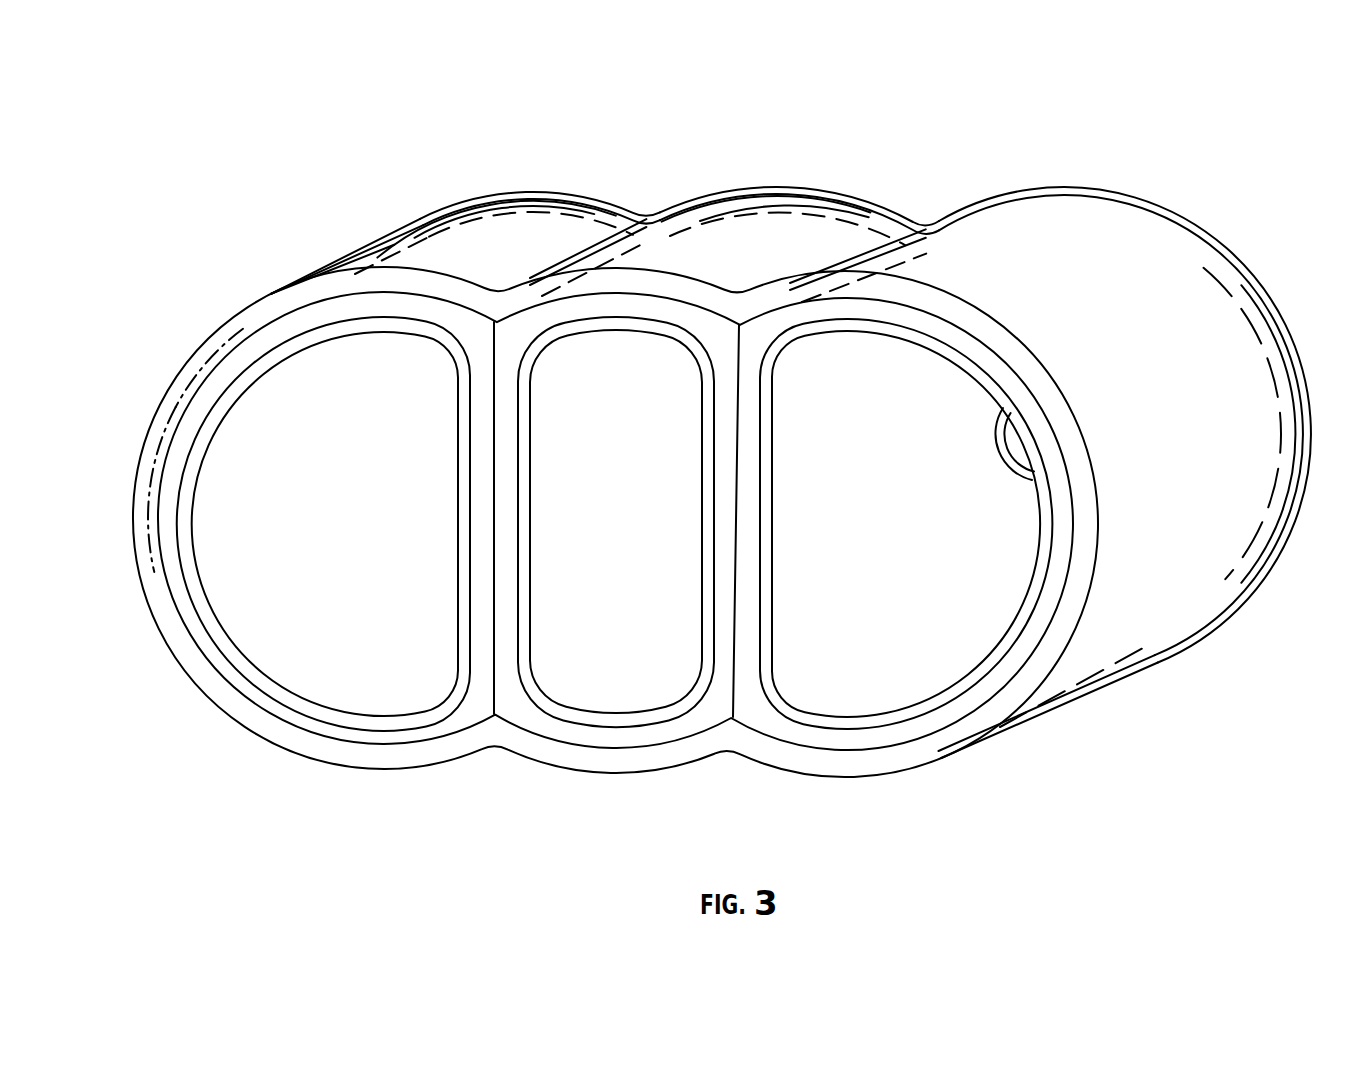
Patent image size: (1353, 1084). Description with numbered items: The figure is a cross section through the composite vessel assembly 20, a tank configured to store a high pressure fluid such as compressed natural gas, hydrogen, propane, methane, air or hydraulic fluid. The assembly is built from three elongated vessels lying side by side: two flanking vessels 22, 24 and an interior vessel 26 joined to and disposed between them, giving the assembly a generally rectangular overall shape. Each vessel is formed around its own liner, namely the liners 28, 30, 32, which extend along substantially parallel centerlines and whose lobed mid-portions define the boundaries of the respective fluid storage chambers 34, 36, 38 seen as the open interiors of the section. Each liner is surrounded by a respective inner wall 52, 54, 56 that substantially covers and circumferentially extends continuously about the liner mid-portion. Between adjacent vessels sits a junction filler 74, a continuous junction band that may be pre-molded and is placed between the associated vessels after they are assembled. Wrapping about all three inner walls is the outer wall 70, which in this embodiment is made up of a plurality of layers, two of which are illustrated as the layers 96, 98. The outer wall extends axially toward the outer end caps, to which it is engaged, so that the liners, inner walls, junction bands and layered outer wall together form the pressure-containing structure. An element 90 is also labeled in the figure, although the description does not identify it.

The vessel assembly 20 is at (791, 421).
The flanking vessel 22 is at (538, 190).
The flanking vessel 24 is at (1143, 197).
The interior vessel 26 is at (822, 183).
The liner 28 is at (273, 682).
The liner 30 is at (795, 707).
The liner 32 is at (570, 708).
The chamber 34 is at (296, 543).
The chamber 36 is at (906, 574).
The chamber 38 is at (616, 573).
The inner wall 52 is at (292, 717).
The inner wall 54 is at (910, 737).
The inner wall 56 is at (652, 735).
The outer wall 70 is at (664, 479).
The junction filler 74 is at (490, 336).
The outer surface 90 is at (420, 767).
The layer 96 is at (189, 385).
The layer 98 is at (167, 407).